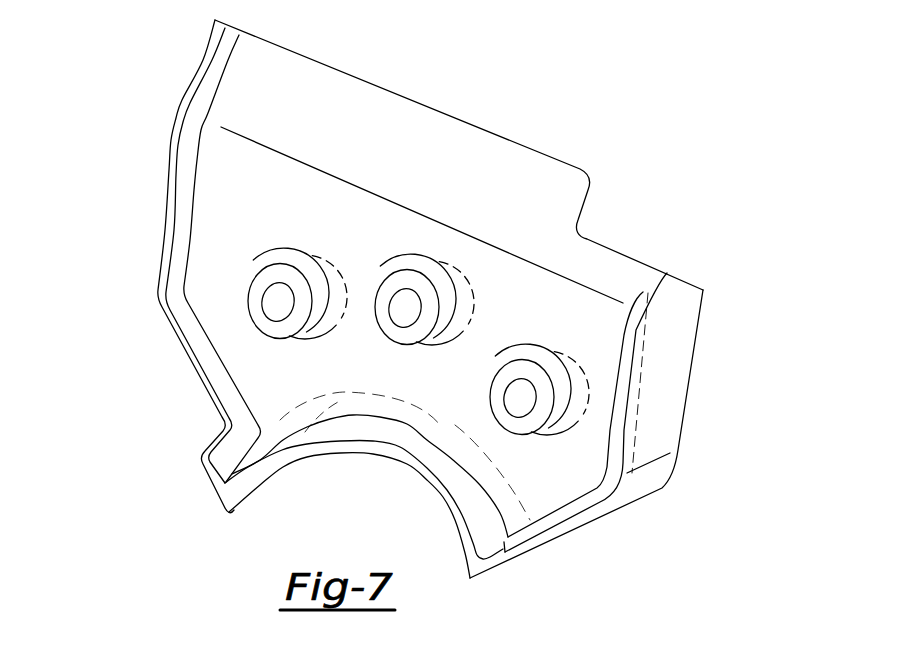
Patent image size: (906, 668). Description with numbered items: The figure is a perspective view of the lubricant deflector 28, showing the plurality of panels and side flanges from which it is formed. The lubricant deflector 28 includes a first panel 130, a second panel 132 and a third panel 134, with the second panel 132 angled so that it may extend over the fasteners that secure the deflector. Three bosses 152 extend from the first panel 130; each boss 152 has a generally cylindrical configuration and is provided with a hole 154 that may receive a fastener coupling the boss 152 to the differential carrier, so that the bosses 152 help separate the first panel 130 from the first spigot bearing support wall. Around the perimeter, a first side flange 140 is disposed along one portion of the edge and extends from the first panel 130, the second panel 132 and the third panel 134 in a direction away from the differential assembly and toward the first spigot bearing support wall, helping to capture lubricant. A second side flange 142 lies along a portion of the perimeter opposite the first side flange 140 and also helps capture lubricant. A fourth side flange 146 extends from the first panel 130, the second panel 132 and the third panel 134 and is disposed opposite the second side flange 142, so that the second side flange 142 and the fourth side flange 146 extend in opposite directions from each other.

The lubricant deflector 28 is at (606, 161).
The first panel 130 is at (256, 234).
The second panel 132 is at (405, 113).
The third panel 134 is at (395, 451).
The first side flange 140 is at (157, 258).
The second side flange 142 is at (615, 397).
The fourth side flange 146 is at (688, 370).
The boss 152 is at (405, 273).
The hole 154 is at (395, 308).